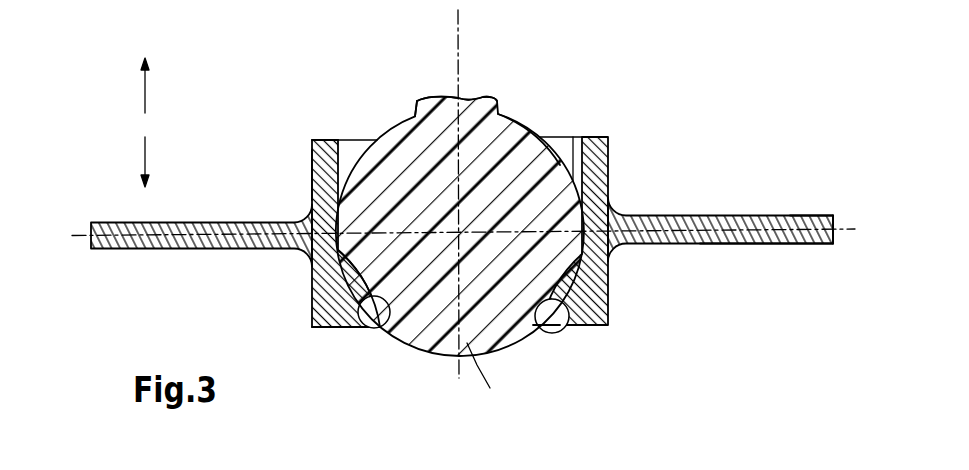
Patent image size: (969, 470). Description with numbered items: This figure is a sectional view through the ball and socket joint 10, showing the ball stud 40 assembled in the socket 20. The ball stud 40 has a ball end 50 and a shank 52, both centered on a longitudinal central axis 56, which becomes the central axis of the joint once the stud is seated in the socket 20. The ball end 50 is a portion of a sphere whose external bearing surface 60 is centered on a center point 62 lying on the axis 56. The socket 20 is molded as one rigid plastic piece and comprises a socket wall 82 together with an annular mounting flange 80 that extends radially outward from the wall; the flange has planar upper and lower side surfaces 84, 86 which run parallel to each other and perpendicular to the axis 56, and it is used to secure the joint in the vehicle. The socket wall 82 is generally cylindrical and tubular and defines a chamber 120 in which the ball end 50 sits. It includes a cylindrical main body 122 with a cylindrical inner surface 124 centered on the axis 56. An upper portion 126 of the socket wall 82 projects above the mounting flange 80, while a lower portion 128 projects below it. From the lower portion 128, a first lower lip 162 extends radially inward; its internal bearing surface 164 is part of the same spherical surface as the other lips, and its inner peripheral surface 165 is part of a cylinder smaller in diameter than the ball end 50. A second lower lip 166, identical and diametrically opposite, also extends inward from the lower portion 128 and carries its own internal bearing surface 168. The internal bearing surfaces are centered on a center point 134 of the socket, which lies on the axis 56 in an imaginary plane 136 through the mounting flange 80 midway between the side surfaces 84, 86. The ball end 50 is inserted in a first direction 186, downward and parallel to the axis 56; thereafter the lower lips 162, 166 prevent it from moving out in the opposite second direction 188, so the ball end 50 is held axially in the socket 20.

The ball and socket joint 10 is at (469, 230).
The socket 20 is at (648, 210).
The ball stud 40 is at (461, 230).
The ball end 50 is at (388, 160).
The shank 52 is at (493, 97).
The longitudinal central axis 56 is at (458, 13).
The external bearing surface 60 is at (537, 128).
The center point 62 is at (477, 365).
The annular mounting flange 80 is at (768, 245).
The socket wall 82 is at (312, 285).
The upper side surface 84 is at (818, 217).
The lower side surface 86 is at (818, 243).
The chamber 120 is at (353, 150).
The cylindrical main body 122 is at (312, 162).
The cylindrical inner surface 124 is at (337, 140).
The upper portion 126 is at (610, 163).
The lower portion 128 is at (610, 297).
The center point 134 is at (497, 375).
The imaginary plane 136 is at (72, 235).
The first lower lip 162 is at (350, 327).
The internal bearing surface 164 is at (378, 280).
The inner peripheral surface 165 is at (371, 328).
The second lower lip 166 is at (556, 327).
The internal bearing surface 168 is at (531, 324).
The first direction 186 is at (165, 162).
The second direction 188 is at (165, 85).